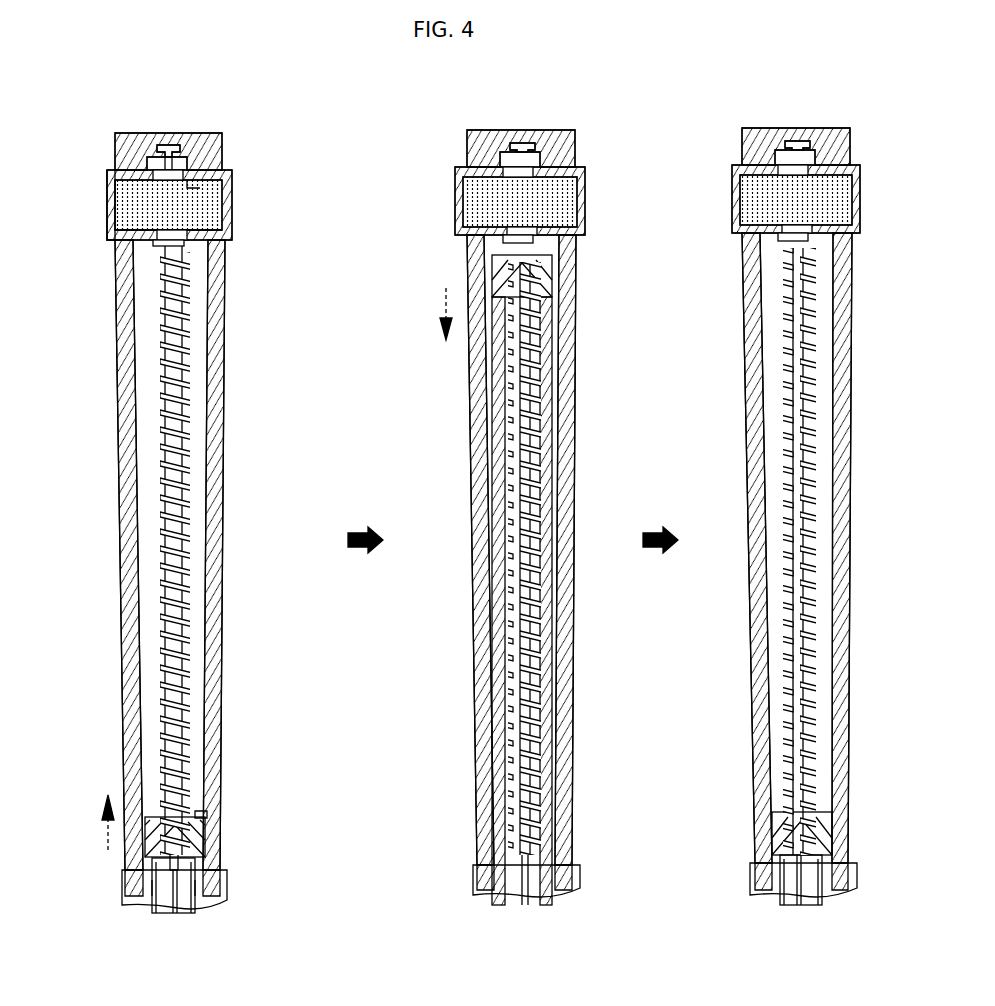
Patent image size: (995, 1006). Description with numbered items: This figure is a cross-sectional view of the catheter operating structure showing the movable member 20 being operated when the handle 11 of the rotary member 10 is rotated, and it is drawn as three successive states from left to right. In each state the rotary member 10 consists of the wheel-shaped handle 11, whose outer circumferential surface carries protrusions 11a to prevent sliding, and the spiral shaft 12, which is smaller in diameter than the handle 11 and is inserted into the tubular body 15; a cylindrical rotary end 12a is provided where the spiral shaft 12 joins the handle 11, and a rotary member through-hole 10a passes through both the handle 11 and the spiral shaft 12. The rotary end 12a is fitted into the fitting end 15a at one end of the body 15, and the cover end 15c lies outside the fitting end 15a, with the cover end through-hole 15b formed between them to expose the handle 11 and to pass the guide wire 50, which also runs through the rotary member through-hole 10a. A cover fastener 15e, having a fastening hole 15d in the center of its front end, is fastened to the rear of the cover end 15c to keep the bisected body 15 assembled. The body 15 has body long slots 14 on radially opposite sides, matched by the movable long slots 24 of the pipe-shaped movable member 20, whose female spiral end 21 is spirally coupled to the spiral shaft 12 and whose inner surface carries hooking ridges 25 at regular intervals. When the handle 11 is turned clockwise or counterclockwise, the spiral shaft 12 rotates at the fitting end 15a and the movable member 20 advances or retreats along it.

The rotary member 10 is at (230, 612).
The rotary member through-hole 10a is at (180, 857).
The handle 11 is at (172, 213).
The protrusions 11a is at (175, 233).
The spiral shaft 12 is at (190, 353).
The rotary end 12a is at (178, 244).
The body long slots 14 is at (186, 912).
The body 15 is at (210, 727).
The fitting end 15a is at (160, 217).
The cover end through-hole 15b is at (190, 186).
The cover end 15c is at (110, 180).
The fastening hole 15d is at (143, 166).
The cover fastener 15e is at (203, 143).
The movable member 20 is at (227, 817).
The female spiral end 21 is at (197, 810).
The movable long slots 24 is at (205, 900).
The hooking ridges 25 is at (157, 893).
The guide wire 50 is at (175, 913).